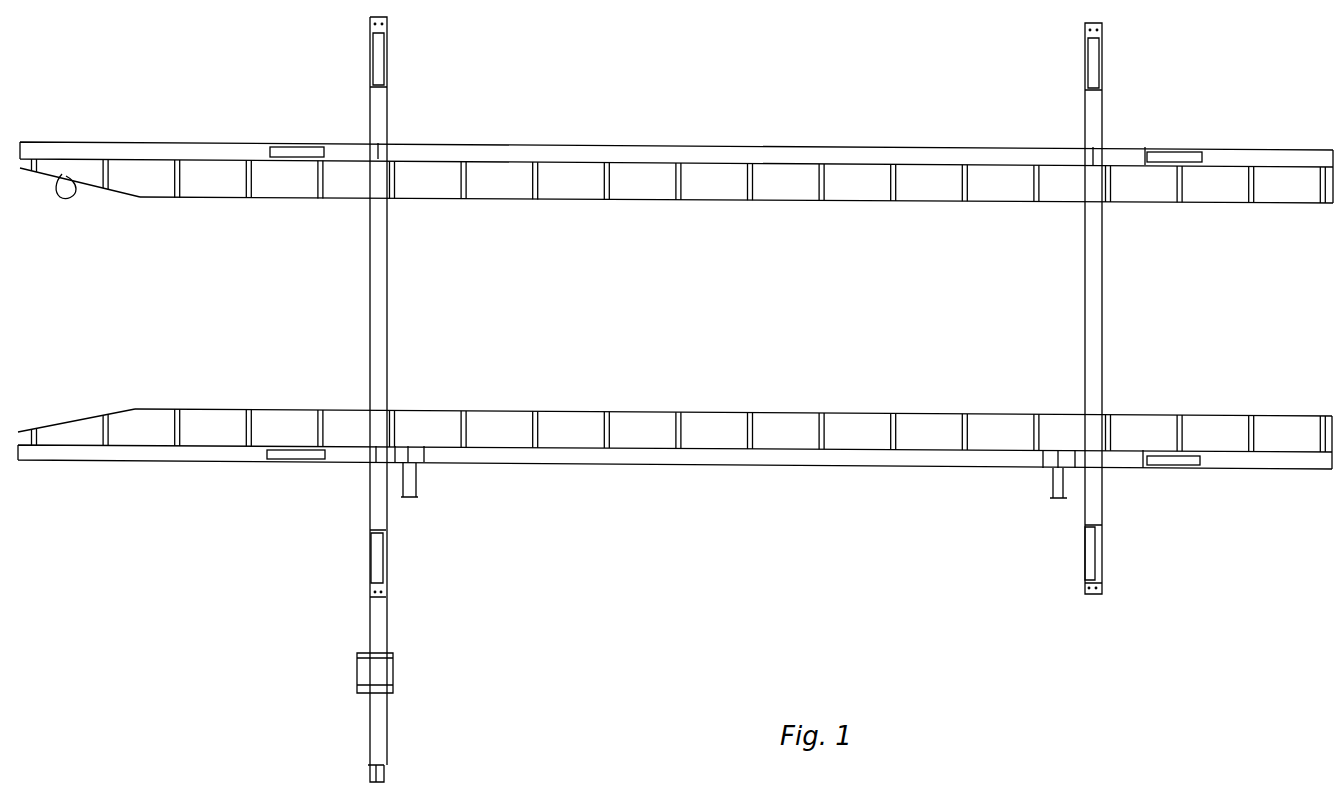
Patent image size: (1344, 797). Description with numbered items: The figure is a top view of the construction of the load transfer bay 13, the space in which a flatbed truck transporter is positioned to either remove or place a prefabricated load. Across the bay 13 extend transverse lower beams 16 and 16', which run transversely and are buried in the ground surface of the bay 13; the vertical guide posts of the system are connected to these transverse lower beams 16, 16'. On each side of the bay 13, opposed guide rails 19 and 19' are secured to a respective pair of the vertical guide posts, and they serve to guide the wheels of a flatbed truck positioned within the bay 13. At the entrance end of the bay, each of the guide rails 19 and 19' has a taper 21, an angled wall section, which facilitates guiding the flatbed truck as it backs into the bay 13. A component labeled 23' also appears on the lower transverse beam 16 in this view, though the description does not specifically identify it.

The load transfer bay 13 is at (903, 327).
The transverse lower beam 16 is at (427, 399).
The transverse lower beam 16' is at (1138, 308).
The guide rail 19 is at (675, 425).
The guide rail 19' is at (676, 203).
The taper 21 is at (64, 174).
The collar 23' is at (420, 674).